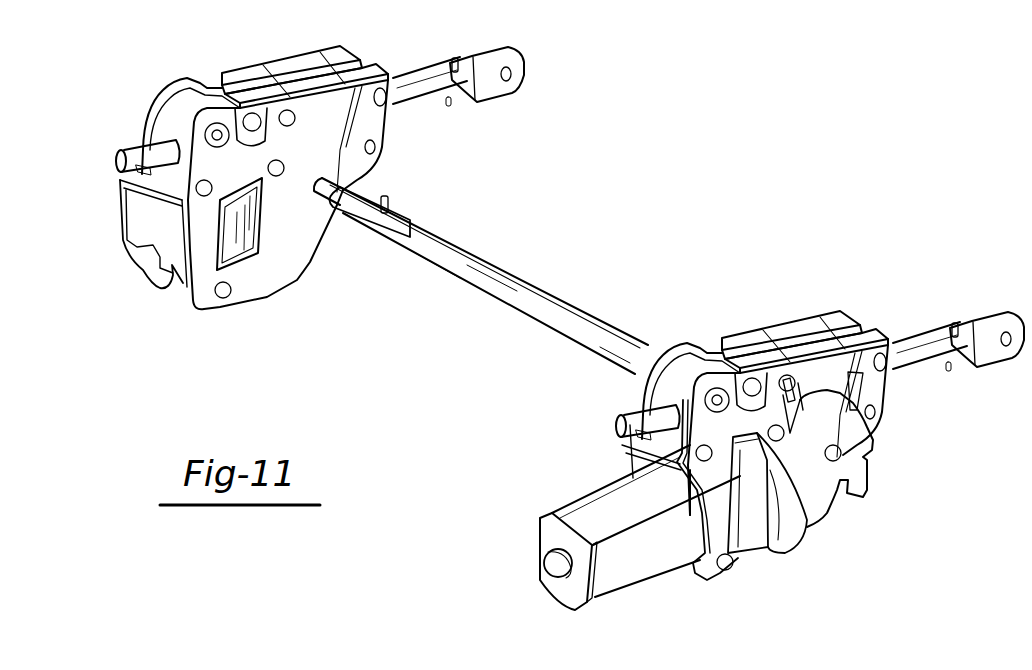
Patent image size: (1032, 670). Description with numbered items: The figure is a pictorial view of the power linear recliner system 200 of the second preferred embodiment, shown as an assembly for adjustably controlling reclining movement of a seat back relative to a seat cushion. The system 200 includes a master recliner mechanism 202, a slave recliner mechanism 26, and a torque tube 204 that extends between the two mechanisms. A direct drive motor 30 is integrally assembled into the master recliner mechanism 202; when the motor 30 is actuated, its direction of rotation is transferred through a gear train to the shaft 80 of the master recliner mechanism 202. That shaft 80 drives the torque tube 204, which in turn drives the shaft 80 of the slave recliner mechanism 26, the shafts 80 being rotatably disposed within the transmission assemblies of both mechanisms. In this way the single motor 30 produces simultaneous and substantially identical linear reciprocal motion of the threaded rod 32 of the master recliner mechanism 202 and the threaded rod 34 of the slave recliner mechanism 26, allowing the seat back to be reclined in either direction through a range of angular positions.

The power linear recliner system 200 is at (667, 257).
The slave recliner mechanism 26 is at (303, 257).
The threaded rod 34 is at (417, 98).
The shaft 80 is at (343, 185).
The torque tube 204 is at (523, 288).
The master recliner mechanism 202 is at (613, 462).
The direct drive motor 30 is at (617, 573).
The threaded rod 32 is at (910, 370).